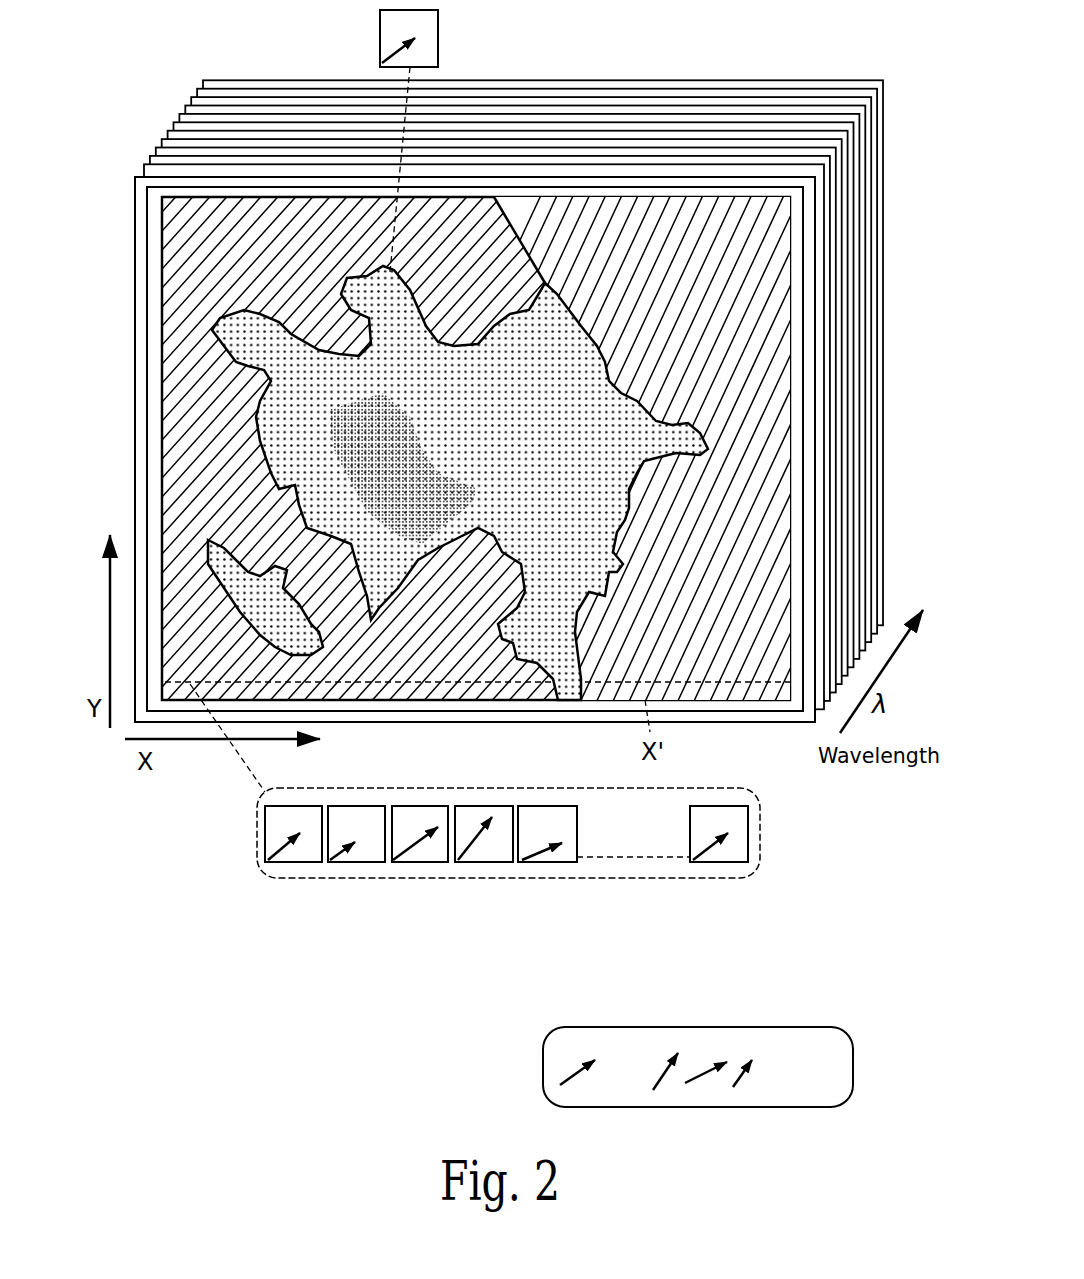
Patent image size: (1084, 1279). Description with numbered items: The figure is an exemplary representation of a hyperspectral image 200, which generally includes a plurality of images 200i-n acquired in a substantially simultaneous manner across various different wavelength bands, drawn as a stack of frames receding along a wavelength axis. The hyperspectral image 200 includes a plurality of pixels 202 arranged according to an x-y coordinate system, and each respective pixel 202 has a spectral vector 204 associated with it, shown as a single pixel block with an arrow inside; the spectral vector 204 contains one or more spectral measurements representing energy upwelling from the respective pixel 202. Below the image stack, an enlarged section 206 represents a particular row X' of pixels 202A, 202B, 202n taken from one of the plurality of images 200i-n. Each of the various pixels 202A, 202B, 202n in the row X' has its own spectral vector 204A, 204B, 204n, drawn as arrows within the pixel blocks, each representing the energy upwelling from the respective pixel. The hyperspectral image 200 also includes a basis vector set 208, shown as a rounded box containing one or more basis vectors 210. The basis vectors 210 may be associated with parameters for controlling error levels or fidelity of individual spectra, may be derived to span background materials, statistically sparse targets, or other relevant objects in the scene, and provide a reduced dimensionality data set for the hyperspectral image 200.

The hyperspectral image 200 is at (198, 305).
The plurality of images 200i-n is at (190, 77).
The pixel 202 is at (438, 20).
The spectral vector 204 is at (390, 55).
The pixel 202A is at (290, 863).
The spectral vector 204A is at (283, 848).
The pixel 202B is at (363, 862).
The spectral vector 204B is at (337, 862).
The pixel 202n is at (750, 848).
The spectral vector 204n is at (705, 858).
The enlarged section 206 is at (538, 877).
The basis vector set 208 is at (680, 1027).
The basis vector 210 is at (568, 1077).